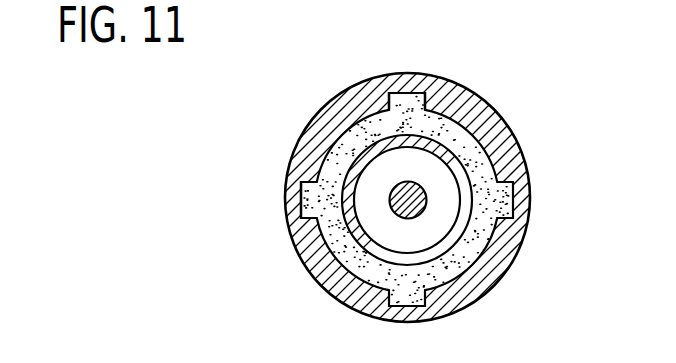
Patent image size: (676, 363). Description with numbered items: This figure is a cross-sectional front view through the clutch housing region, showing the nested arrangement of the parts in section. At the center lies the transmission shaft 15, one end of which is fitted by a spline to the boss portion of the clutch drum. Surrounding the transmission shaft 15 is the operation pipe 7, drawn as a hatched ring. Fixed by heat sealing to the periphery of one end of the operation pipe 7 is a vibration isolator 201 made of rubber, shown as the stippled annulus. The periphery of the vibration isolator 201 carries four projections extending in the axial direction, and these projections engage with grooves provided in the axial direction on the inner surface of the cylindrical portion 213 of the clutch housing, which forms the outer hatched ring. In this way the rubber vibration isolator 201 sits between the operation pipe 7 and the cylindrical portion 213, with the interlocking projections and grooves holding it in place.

The cylindrical portion 213 is at (337, 113).
The vibration isolator 201 is at (328, 168).
The operation pipe 7 is at (423, 138).
The transmission shaft 15 is at (417, 190).